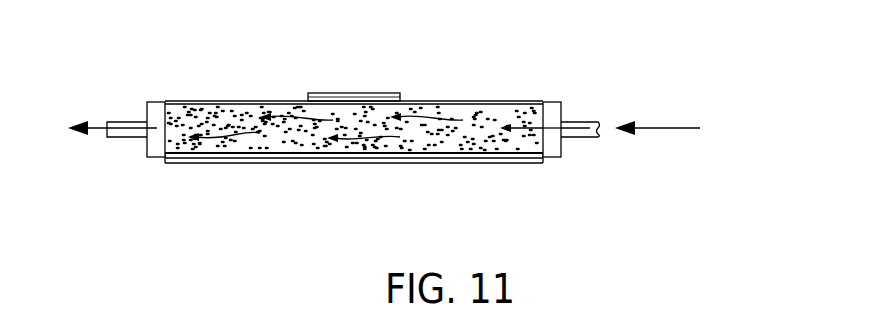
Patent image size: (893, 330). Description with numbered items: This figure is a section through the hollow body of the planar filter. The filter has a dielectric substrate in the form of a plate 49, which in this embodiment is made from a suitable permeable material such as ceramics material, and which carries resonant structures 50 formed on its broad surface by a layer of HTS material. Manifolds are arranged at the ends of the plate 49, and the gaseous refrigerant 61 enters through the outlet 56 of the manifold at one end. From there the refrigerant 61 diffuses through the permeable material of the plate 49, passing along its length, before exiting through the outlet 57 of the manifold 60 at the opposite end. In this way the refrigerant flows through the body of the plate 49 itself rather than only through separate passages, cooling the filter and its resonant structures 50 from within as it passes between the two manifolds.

The plate 49 is at (437, 100).
The resonant structures 50 is at (330, 95).
The outlet of manifold 56 is at (595, 121).
The outlet of manifold 57 is at (132, 120).
The manifold 60 is at (155, 101).
The gaseous refrigerant 61 is at (555, 101).